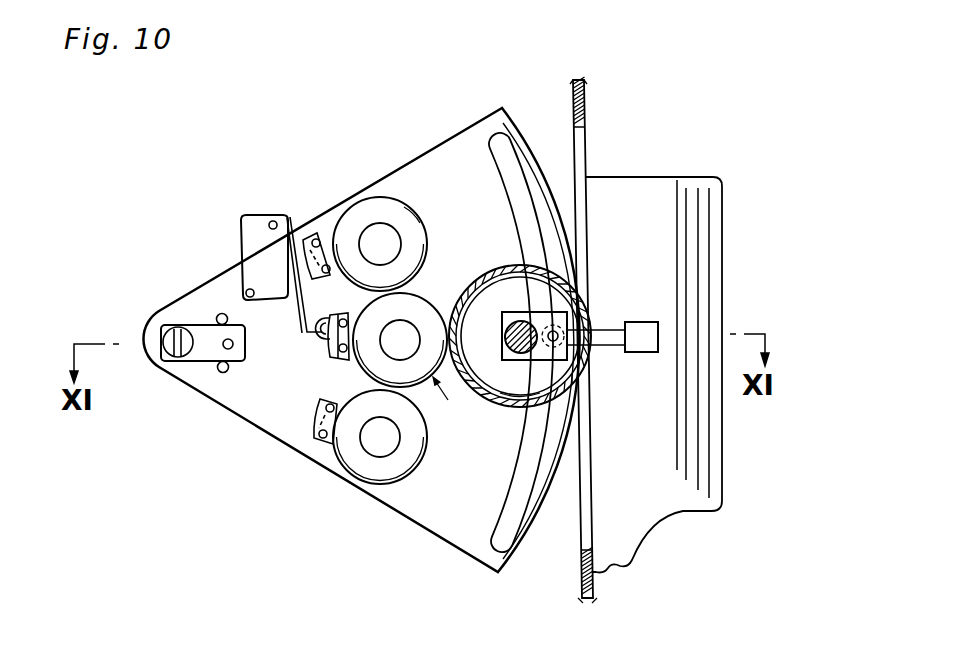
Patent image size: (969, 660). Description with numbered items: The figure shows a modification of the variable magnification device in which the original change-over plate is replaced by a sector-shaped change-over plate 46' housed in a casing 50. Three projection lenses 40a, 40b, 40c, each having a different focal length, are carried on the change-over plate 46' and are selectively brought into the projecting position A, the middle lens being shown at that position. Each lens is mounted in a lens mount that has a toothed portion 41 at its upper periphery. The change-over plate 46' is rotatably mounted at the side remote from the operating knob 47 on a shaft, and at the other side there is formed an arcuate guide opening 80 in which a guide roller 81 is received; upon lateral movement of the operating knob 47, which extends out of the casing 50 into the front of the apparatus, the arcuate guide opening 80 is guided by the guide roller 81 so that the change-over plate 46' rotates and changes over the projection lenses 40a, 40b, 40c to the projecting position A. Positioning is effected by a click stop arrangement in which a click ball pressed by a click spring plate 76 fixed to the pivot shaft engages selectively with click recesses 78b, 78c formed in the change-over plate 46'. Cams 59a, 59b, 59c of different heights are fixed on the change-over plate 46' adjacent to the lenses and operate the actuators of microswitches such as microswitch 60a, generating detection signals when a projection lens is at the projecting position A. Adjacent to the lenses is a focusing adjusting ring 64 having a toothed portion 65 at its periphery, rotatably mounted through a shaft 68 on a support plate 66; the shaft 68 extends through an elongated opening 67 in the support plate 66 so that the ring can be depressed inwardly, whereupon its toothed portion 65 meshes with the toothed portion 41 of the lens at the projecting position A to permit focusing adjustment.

The projection lens 40a is at (396, 340).
The projection lens 40b is at (380, 240).
The projection lens 40c is at (378, 457).
The toothed portion 41 is at (404, 207).
The change-over plate 46' is at (361, 340).
The operating knob 47 is at (637, 322).
The casing 50 is at (585, 92).
The cam 59a is at (330, 340).
The cam 59b is at (309, 238).
The cam 59c is at (313, 440).
The microswitch 60a is at (262, 216).
The focusing adjusting ring 64 is at (503, 273).
The toothed portion 65 is at (487, 272).
The support plate 66 is at (519, 405).
The elongated opening 67 is at (502, 318).
The shaft 68 is at (509, 358).
The click spring plate 76 is at (195, 327).
The click recess 78b is at (222, 313).
The click recess 78c is at (224, 373).
The arcuate guide opening 80 is at (508, 146).
The guide roller 81 is at (563, 346).
The projecting position A is at (441, 403).